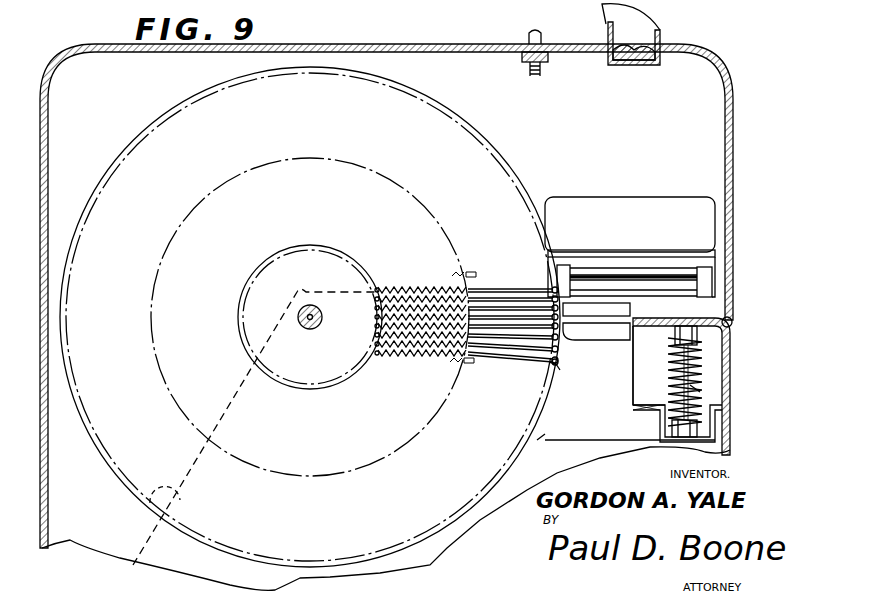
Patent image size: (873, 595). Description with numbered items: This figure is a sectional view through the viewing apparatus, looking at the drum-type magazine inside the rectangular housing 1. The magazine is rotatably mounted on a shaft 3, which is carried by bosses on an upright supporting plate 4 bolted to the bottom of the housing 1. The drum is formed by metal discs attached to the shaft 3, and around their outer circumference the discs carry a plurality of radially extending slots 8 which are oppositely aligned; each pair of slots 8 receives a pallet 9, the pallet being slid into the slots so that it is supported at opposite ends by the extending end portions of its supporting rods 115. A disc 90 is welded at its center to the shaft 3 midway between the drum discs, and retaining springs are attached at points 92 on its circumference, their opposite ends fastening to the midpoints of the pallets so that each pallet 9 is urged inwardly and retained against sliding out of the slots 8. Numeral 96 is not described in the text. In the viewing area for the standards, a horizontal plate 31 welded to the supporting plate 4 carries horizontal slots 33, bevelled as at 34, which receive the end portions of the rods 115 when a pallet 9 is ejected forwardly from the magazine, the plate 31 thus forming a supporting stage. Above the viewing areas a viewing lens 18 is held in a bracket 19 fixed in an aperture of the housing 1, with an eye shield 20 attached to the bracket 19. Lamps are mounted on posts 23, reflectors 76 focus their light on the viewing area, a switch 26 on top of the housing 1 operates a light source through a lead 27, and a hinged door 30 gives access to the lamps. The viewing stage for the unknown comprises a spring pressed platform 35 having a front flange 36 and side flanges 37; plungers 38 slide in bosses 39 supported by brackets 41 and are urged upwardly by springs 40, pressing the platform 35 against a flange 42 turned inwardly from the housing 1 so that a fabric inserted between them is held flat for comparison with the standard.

The housing 1 is at (62, 56).
The shaft 3 is at (310, 330).
The supporting plate 4 is at (160, 498).
The radially extending slots 8 is at (557, 362).
The pallet 9 is at (515, 350).
The viewing lens 18 is at (640, 64).
The bracket 19 is at (607, 36).
The eye shield 20 is at (661, 26).
The posts 23 is at (702, 283).
The switch 26 is at (530, 36).
The lead 27 is at (533, 78).
The hinged door 30 is at (663, 207).
The plate 31 is at (619, 365).
The horizontal slots 33 is at (602, 330).
The bevel 34 is at (575, 335).
The spring pressed platform 35 is at (712, 332).
The front flange 36 is at (732, 372).
The side flanges 37 is at (640, 396).
The plungers 38 is at (703, 389).
The bosses 39 is at (720, 437).
The springs 40 is at (696, 370).
The brackets 41 is at (662, 430).
The flange 42 is at (733, 320).
The reflectors 76 is at (714, 254).
The disc 90 is at (348, 366).
The attachment points 92 is at (384, 289).
The zigzag spring contact 96 is at (418, 289).
The supporting rods 115 is at (549, 366).